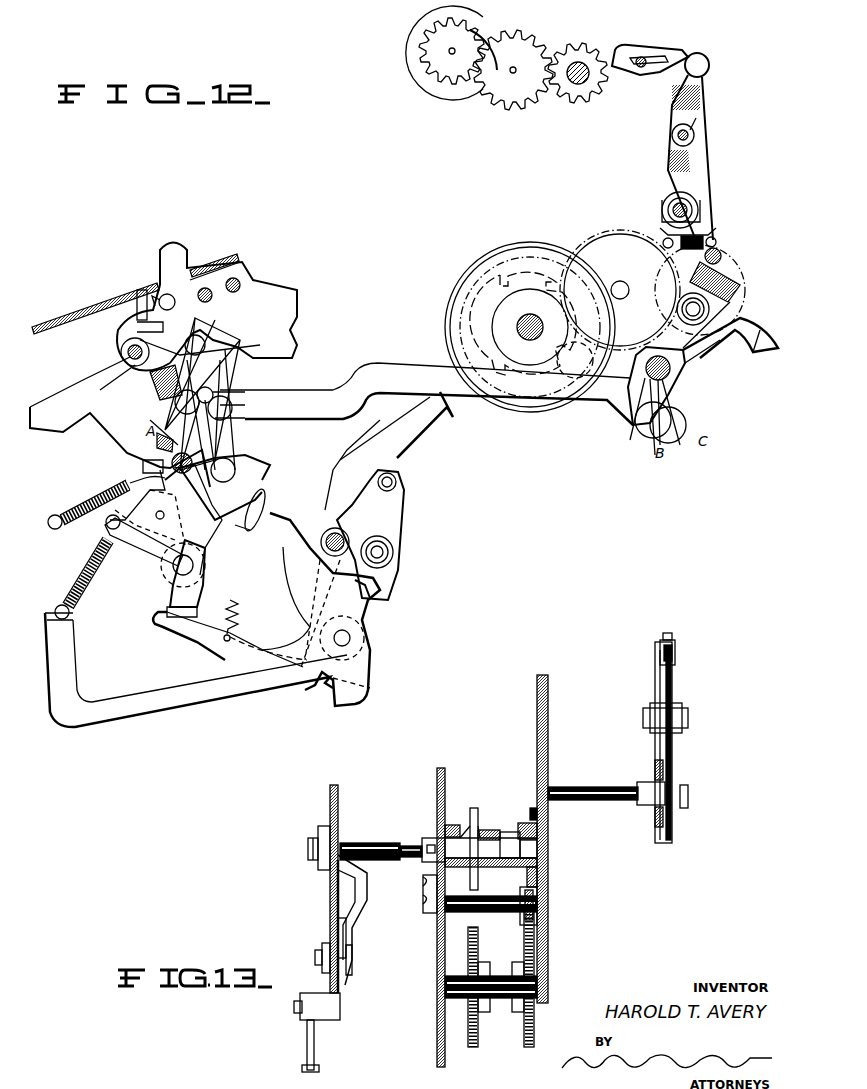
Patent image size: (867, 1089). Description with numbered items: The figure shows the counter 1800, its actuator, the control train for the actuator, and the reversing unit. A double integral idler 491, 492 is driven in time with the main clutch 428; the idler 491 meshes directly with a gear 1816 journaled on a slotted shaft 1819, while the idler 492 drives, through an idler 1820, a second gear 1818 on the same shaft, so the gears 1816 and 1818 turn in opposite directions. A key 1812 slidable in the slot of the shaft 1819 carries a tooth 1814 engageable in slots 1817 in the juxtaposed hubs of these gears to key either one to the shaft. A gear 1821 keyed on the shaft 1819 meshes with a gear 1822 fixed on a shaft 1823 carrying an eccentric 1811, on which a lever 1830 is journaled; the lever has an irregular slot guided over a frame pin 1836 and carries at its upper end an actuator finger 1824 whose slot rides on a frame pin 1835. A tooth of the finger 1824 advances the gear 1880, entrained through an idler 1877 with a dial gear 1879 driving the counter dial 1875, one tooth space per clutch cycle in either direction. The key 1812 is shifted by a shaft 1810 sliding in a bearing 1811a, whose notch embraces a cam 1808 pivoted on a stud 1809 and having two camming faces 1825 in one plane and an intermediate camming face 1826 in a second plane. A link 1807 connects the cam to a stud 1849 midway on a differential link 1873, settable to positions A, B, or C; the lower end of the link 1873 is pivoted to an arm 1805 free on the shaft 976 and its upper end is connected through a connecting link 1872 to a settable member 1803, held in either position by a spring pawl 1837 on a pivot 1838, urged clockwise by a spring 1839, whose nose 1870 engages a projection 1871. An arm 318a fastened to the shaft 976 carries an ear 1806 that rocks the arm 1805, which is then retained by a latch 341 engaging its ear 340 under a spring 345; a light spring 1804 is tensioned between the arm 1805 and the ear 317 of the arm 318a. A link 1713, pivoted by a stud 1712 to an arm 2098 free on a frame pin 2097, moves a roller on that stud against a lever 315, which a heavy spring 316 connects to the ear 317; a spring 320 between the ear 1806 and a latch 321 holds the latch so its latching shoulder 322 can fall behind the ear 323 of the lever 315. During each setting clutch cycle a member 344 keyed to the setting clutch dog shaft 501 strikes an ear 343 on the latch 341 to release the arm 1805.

In FIG. 12, the gear train 1800 is at (406, 23).
In FIG. 12, the counter dial 1875 is at (408, 33).
In FIG. 12, the dial gear 1879 is at (421, 52).
In FIG. 12, the idler 1877 is at (504, 107).
In FIG. 12, the gear 1880 is at (571, 100).
In FIG. 12, the actuator finger 1824 is at (640, 46).
In FIG. 13, the actuator finger 1824 is at (673, 648).
In FIG. 12, the frame pin 1835 is at (648, 58).
In FIG. 12, the lever 1830 is at (701, 98).
In FIG. 13, the lever 1830 is at (675, 684).
In FIG. 12, the frame pin 1836 is at (676, 135).
In FIG. 13, the frame pin 1836 is at (692, 718).
In FIG. 12, the shaft 1823 is at (694, 211).
In FIG. 13, the shaft 1823 is at (584, 786).
In FIG. 12, the eccentric 1811 is at (664, 208).
In FIG. 13, the bearing 1811a is at (318, 836).
In FIG. 12, the gear 1816 is at (730, 240).
In FIG. 13, the gear 1816 is at (437, 932).
In FIG. 12, the shaft 1810 is at (744, 252).
In FIG. 13, the shaft 1810 is at (388, 842).
In FIG. 12, the main clutch 428 is at (466, 300).
In FIG. 12, the idler 491 is at (580, 245).
In FIG. 13, the idler 491 is at (470, 1030).
In FIG. 12, the idler 492 is at (597, 238).
In FIG. 13, the idler 492 is at (535, 950).
In FIG. 12, the link 1807 is at (405, 370).
In FIG. 13, the link 1807 is at (306, 1048).
In FIG. 12, the link 1713 is at (429, 435).
In FIG. 12, the cam 1808 is at (660, 400).
In FIG. 13, the cam 1808 is at (345, 896).
In FIG. 12, the stud 1809 is at (670, 375).
In FIG. 13, the stud 1809 is at (318, 955).
In FIG. 12, the idler 1820 is at (700, 325).
In FIG. 13, the idler 1820 is at (552, 922).
In FIG. 12, the camming faces 1825 is at (690, 285).
In FIG. 13, the camming faces 1825 is at (340, 926).
In FIG. 12, the intermediate camming face 1826 is at (745, 295).
In FIG. 13, the intermediate camming face 1826 is at (362, 895).
In FIG. 12, the settable member 1803 is at (181, 242).
In FIG. 12, the projection 1871 is at (128, 308).
In FIG. 12, the spring pawl 1837 is at (106, 322).
In FIG. 12, the nose 1870 is at (126, 353).
In FIG. 12, the connecting link 1872 is at (150, 380).
In FIG. 12, the differentially settable link 1873 is at (158, 388).
In FIG. 12, the stud 1849 is at (176, 410).
In FIG. 12, the pivot 1838 is at (236, 406).
In FIG. 12, the ear 1806 is at (160, 462).
In FIG. 12, the spring 320 is at (143, 468).
In FIG. 12, the spring 1839 is at (86, 502).
In FIG. 12, the ear 317 is at (106, 514).
In FIG. 12, the spring 316 is at (88, 592).
In FIG. 12, the arm 318a is at (144, 549).
In FIG. 12, the spring 1804 is at (153, 517).
In FIG. 12, the shaft 976 is at (194, 565).
In FIG. 12, the latch 321 is at (228, 532).
In FIG. 12, the arm 1805 is at (230, 467).
In FIG. 12, the latching shoulder 322 is at (262, 500).
In FIG. 12, the ear 323 is at (276, 514).
In FIG. 12, the stud 1712 is at (336, 530).
In FIG. 12, the member 344 is at (395, 584).
In FIG. 12, the setting clutch dog shaft 501 is at (394, 553).
In FIG. 12, the arm 2098 is at (373, 600).
In FIG. 12, the frame pin 2097 is at (350, 638).
In FIG. 12, the ear 343 is at (368, 695).
In FIG. 12, the spring 345 is at (244, 612).
In FIG. 12, the ear 340 is at (158, 614).
In FIG. 12, the latch 341 is at (198, 640).
In FIG. 12, the lever 315 is at (80, 700).
In FIG. 13, the gear 1822 is at (537, 772).
In FIG. 13, the key 1812 is at (452, 838).
In FIG. 13, the tooth 1814 is at (500, 836).
In FIG. 13, the slots 1817 is at (550, 836).
In FIG. 13, the slotted shaft 1819 is at (540, 850).
In FIG. 13, the gear 1821 is at (540, 862).
In FIG. 13, the second gear 1818 is at (540, 878).